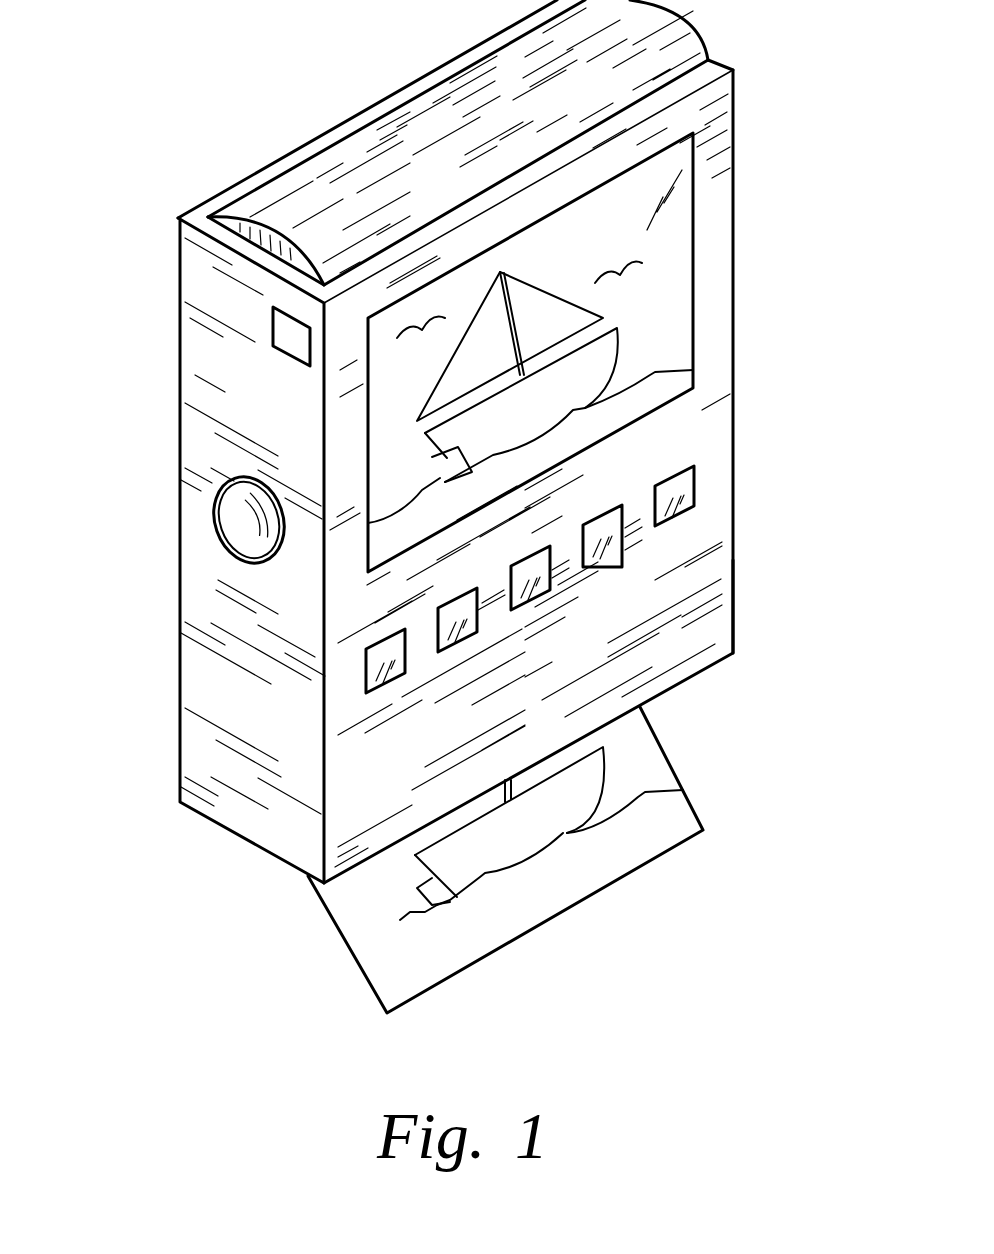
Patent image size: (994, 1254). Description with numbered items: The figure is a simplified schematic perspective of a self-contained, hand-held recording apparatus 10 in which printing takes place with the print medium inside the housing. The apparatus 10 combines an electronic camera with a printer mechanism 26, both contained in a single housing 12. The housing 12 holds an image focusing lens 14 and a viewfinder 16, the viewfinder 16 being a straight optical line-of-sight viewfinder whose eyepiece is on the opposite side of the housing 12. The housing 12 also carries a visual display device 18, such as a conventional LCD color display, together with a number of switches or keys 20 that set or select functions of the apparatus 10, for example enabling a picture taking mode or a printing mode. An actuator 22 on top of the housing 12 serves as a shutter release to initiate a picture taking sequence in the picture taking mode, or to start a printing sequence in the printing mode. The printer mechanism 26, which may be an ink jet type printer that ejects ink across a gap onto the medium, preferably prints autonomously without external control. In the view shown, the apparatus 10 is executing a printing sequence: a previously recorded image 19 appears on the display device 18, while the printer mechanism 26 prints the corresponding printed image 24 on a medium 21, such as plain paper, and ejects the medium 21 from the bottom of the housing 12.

The recording apparatus 10 is at (462, 441).
The housing 12 is at (737, 132).
The image focusing lens 14 is at (232, 547).
The viewfinder 16 is at (293, 343).
The visual display device 18 is at (619, 352).
The recorded image 19 is at (644, 326).
The switches or keys 20 is at (694, 486).
The medium 21 is at (526, 862).
The actuator 22 is at (337, 211).
The printed image 24 is at (634, 767).
The printer mechanism 26 is at (737, 606).